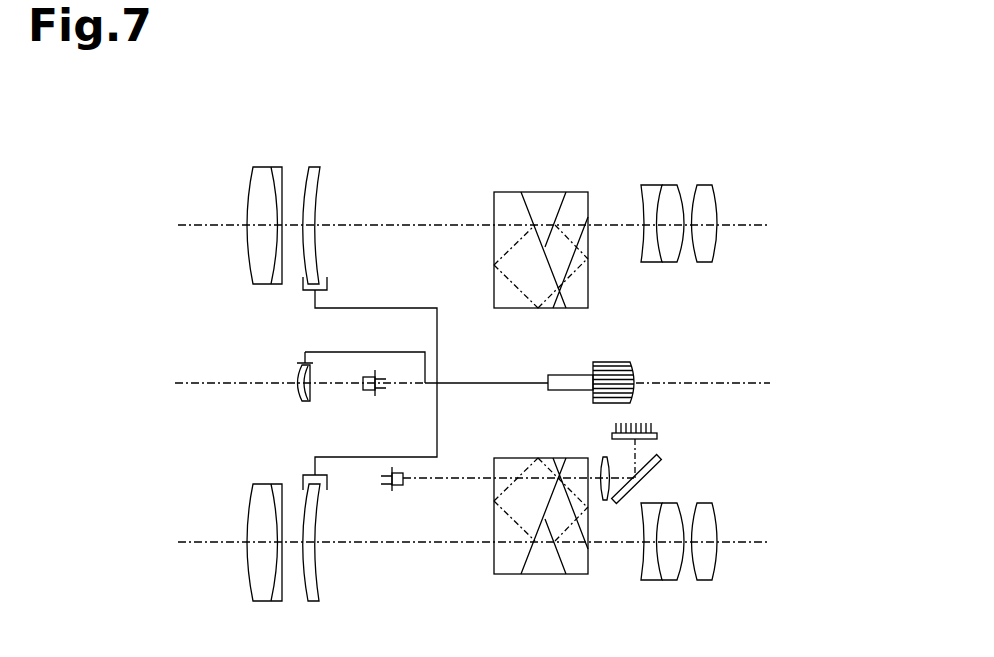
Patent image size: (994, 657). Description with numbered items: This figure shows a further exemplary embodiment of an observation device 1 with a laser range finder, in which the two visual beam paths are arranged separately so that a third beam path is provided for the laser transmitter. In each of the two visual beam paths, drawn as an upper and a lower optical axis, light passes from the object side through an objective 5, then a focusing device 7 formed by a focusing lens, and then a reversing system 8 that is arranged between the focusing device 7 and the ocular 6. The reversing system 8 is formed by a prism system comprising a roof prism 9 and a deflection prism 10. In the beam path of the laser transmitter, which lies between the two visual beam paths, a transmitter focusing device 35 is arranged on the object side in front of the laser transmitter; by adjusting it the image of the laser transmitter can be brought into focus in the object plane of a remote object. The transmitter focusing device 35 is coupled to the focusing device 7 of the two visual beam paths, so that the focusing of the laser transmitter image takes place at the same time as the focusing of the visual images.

The observation device 1 is at (799, 0).
The objective lens 5 is at (256, 160).
The ocular 6 is at (679, 176).
The focusing device 7 is at (323, 162).
The reversing system 8 is at (624, 307).
The roof prism 9 is at (592, 320).
The deflection prism 10 is at (519, 316).
The transmitter focusing device 35 is at (296, 402).